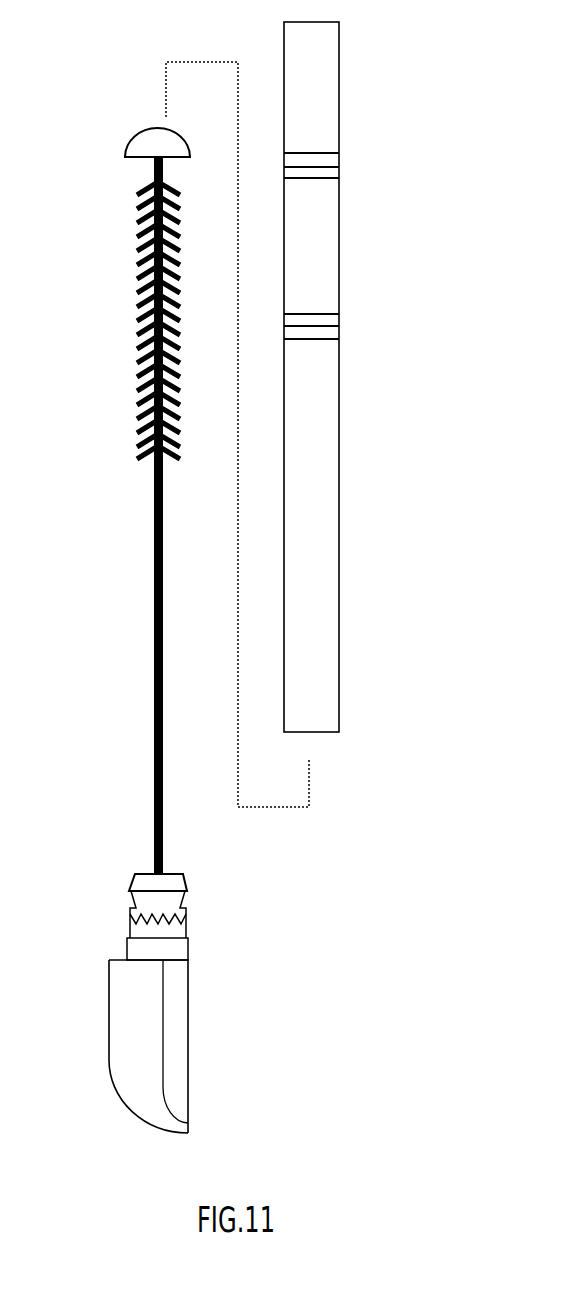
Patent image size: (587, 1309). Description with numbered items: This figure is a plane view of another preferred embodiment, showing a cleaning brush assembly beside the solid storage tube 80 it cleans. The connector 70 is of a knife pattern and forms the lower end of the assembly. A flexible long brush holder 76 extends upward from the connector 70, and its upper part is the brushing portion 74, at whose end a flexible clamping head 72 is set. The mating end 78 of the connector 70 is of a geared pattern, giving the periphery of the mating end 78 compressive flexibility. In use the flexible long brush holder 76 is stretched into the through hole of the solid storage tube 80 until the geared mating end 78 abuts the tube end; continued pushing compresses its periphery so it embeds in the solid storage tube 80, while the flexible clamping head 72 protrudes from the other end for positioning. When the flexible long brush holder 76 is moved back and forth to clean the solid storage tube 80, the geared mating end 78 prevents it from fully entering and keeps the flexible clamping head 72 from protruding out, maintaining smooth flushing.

The connector 70 is at (210, 1022).
The flexible clamping head 72 is at (131, 143).
The brushing portion 74 is at (136, 364).
The flexible long brush holder 76 is at (167, 663).
The mating end 78 is at (196, 898).
The solid storage tube 80 is at (339, 440).